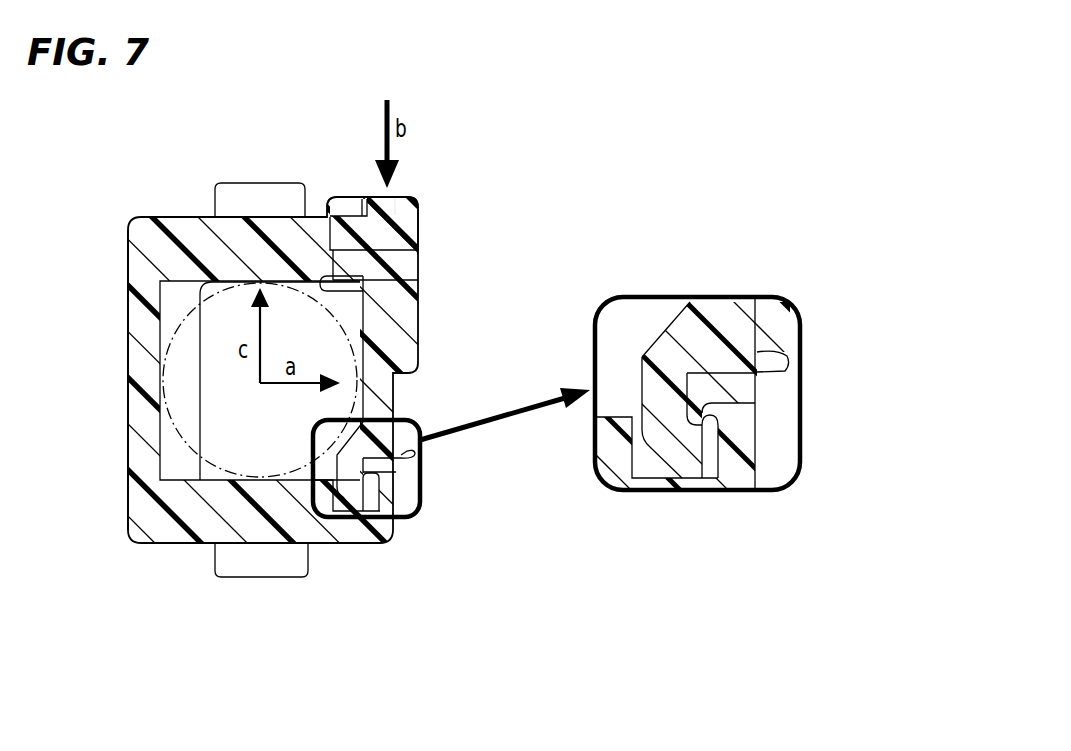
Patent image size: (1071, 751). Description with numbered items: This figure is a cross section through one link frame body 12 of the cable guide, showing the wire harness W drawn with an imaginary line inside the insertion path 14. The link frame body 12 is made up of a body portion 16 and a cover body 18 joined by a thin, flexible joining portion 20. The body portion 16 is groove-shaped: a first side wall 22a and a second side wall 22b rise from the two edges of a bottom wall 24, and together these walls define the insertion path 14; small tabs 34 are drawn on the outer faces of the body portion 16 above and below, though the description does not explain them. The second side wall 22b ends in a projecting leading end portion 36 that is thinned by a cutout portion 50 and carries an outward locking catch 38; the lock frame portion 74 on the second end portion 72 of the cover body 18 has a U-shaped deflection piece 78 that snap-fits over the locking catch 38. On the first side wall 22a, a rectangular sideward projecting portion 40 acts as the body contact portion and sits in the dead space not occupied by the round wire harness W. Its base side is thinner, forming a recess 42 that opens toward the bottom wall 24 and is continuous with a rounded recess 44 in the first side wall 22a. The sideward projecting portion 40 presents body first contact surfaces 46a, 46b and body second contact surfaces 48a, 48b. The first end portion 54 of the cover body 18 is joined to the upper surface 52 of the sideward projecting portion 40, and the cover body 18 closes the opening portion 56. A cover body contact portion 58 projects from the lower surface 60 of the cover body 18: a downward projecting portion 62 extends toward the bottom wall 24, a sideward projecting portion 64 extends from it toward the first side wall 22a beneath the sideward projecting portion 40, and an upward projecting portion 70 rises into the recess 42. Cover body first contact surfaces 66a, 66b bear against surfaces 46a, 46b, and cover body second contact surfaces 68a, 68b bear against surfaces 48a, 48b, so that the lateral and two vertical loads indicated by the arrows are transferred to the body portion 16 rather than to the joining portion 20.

The link frame body 12 is at (262, 132).
The insertion path 14 is at (170, 305).
The body portion 16 is at (88, 431).
The cover body 18 is at (455, 358).
The joining portion 20 is at (412, 455).
The first side wall 22a is at (200, 520).
The second side wall 22b is at (200, 242).
The bottom wall 24 is at (140, 416).
The mounting tab 34 is at (262, 197).
The projecting leading end portion 36 is at (413, 228).
The locking catch 38 is at (383, 206).
The sideward projecting portion 40 is at (372, 466).
The recess 42 is at (725, 478).
The recess 44 is at (632, 417).
The body first contact surface 46a is at (700, 350).
The body first contact surface 46b is at (712, 455).
The body second contact surface 48a is at (762, 352).
The body second contact surface 48b is at (722, 437).
The cutout portion 50 is at (355, 258).
The upper surface 52 is at (740, 440).
The first end portion 54 is at (420, 422).
The opening portion 56 is at (330, 305).
The cover body contact portion 58 is at (345, 470).
The lower surface 60 is at (350, 340).
The downward projecting portion 62 is at (688, 345).
The sideward projecting portion 64 is at (660, 400).
The cover body first contact surface 66a is at (725, 383).
The cover body first contact surface 66b is at (735, 458).
The cover body second contact surface 68a is at (705, 382).
The cover body second contact surface 68b is at (704, 414).
The upward projecting portion 70 is at (690, 447).
The second end portion 72 is at (440, 250).
The lock frame portion 74 is at (357, 160).
The deflection piece 78 is at (348, 207).
The wire harness W is at (175, 340).